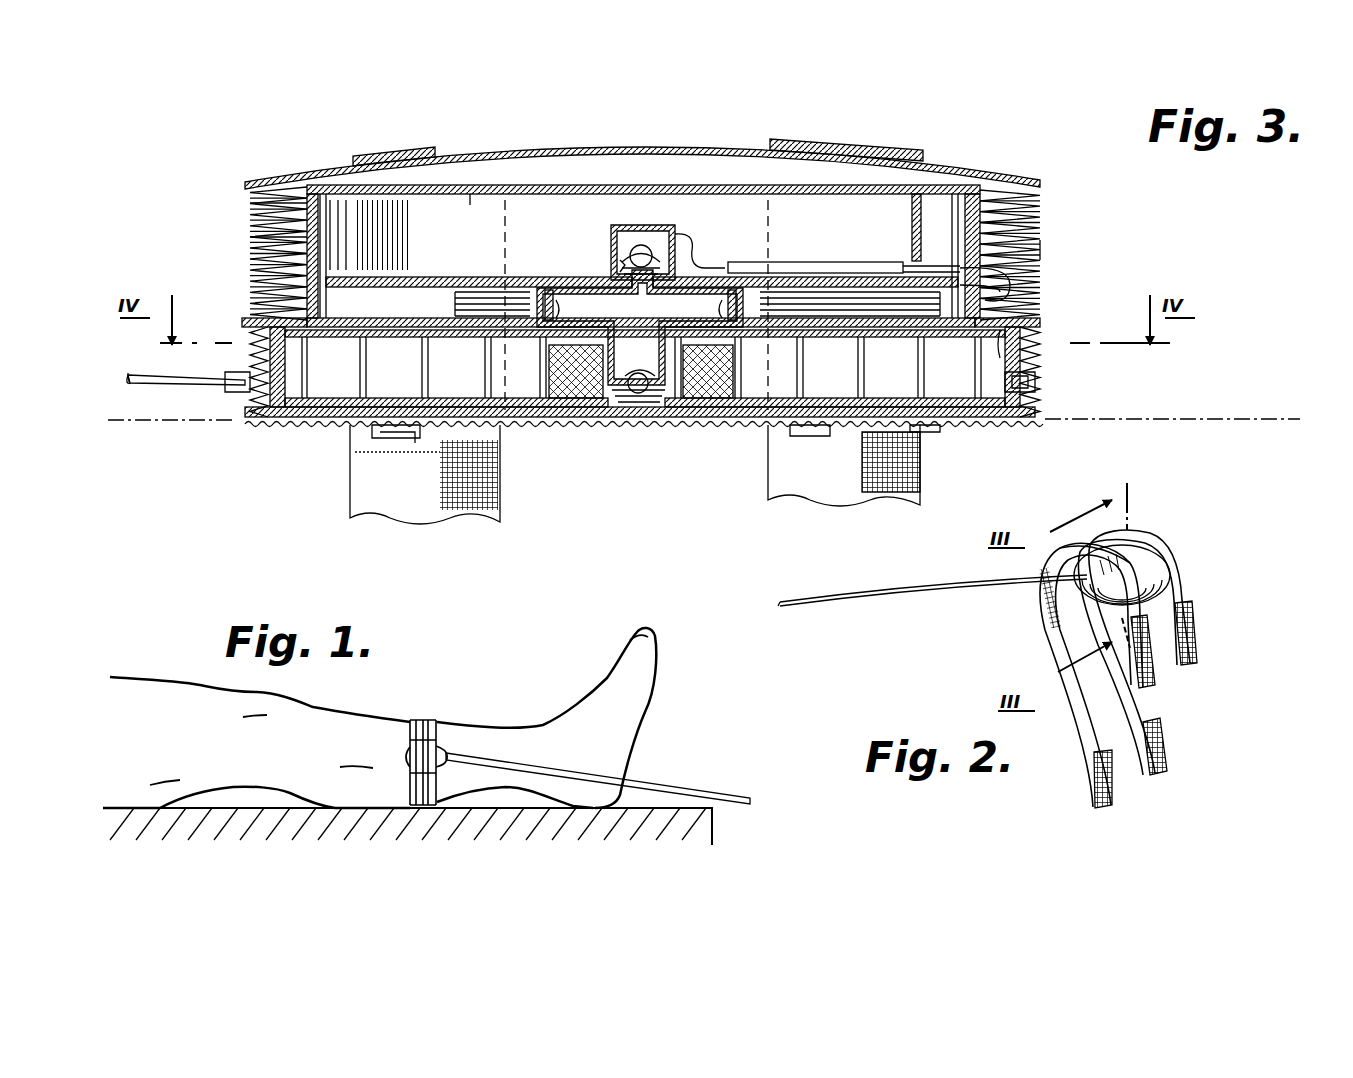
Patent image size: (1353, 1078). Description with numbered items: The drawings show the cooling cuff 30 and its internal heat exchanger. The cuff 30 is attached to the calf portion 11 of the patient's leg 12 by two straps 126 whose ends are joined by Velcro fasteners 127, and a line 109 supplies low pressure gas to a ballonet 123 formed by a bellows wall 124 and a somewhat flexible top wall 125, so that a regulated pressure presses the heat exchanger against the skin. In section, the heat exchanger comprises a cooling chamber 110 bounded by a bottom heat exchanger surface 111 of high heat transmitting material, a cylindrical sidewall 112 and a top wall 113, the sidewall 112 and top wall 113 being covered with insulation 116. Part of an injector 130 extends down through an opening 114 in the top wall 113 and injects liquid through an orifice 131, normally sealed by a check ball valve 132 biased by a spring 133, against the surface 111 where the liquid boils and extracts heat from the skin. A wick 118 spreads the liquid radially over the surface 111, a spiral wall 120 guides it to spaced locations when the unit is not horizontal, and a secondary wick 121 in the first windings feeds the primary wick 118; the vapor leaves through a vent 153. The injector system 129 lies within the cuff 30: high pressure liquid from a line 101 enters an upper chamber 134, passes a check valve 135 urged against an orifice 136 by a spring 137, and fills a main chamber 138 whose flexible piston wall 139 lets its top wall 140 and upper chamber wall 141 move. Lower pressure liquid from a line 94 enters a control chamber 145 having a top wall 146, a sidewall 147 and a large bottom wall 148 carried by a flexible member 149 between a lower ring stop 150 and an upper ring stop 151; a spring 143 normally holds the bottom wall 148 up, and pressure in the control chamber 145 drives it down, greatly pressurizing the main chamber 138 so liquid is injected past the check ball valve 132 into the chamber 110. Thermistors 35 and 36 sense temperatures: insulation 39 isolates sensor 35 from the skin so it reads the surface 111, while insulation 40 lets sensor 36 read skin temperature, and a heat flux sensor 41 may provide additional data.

In FIG. 3, the calf portion 11 is at (1228, 418).
In FIG. 1, the calf portion 11 is at (378, 720).
In FIG. 1, the patient's leg 12 is at (180, 700).
In FIG. 3, the cooling cuff 30 is at (1048, 260).
In FIG. 2, the cooling cuff 30 is at (1200, 545).
In FIG. 1, the cooling cuff 30 is at (455, 745).
In FIG. 3, the thermistor 35 is at (862, 440).
In FIG. 3, the thermistor 36 is at (400, 445).
In FIG. 3, the insulation 39 is at (900, 465).
In FIG. 3, the insulation 40 is at (372, 445).
In FIG. 3, the heat flux sensor 41 is at (803, 435).
In FIG. 3, the line 94 is at (990, 270).
In FIG. 3, the line 101 is at (1020, 240).
In FIG. 3, the line 109 is at (220, 400).
In FIG. 2, the line 109 is at (918, 590).
In FIG. 1, the line 109 is at (682, 780).
In FIG. 3, the cooling chamber 110 is at (1040, 340).
In FIG. 3, the bottom heat exchanger surface 111 is at (990, 425).
In FIG. 3, the cylindrical sidewall 112 is at (285, 315).
In FIG. 3, the top wall 113 is at (1010, 320).
In FIG. 3, the opening 114 is at (670, 360).
In FIG. 3, the insulation 116 is at (245, 322).
In FIG. 3, the wick 118 is at (950, 425).
In FIG. 3, the spiral wall 120 is at (290, 418).
In FIG. 3, the secondary wick 121 is at (740, 380).
In FIG. 3, the ballonet 123 is at (655, 140).
In FIG. 3, the bellows wall 124 is at (1042, 210).
In FIG. 3, the top wall 125 is at (542, 152).
In FIG. 3, the straps 126 is at (360, 155).
In FIG. 2, the straps 126 is at (1040, 630).
In FIG. 1, the straps 126 is at (425, 718).
In FIG. 2, the Velcro fasteners 127 is at (1197, 655).
In FIG. 3, the injector system 129 is at (865, 168).
In FIG. 3, the injector 130 is at (690, 320).
In FIG. 3, the orifice 131 is at (638, 395).
In FIG. 3, the check ball valve 132 is at (625, 400).
In FIG. 3, the spring 133 is at (657, 415).
In FIG. 3, the upper chamber 134 is at (682, 232).
In FIG. 3, the check valve 135 is at (620, 240).
In FIG. 3, the orifice 136 is at (648, 248).
In FIG. 3, the spring 137 is at (615, 262).
In FIG. 3, the main chamber 138 is at (735, 262).
In FIG. 3, the piston wall 139 is at (548, 320).
In FIG. 3, the top wall 140 is at (590, 350).
In FIG. 3, the upper chamber wall 141 is at (632, 250).
In FIG. 3, the spring 143 is at (462, 300).
In FIG. 3, the control chamber 145 is at (400, 200).
In FIG. 3, the top wall 146 is at (470, 190).
In FIG. 3, the sidewall 147 is at (300, 210).
In FIG. 3, the bottom wall 148 is at (300, 250).
In FIG. 3, the flexible member 149 is at (920, 295).
In FIG. 3, the lower ring stop 150 is at (388, 337).
In FIG. 3, the upper ring stop 151 is at (325, 200).
In FIG. 3, the vent 153 is at (1038, 380).